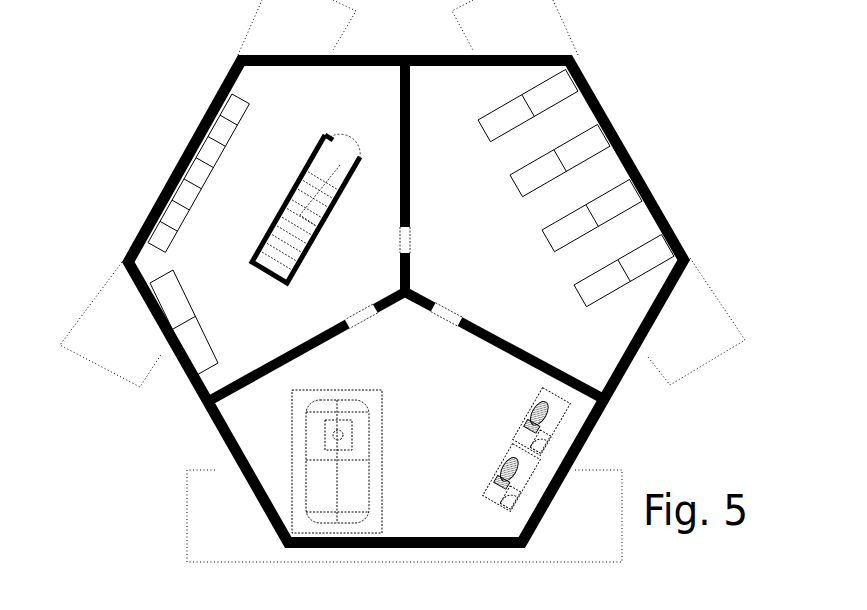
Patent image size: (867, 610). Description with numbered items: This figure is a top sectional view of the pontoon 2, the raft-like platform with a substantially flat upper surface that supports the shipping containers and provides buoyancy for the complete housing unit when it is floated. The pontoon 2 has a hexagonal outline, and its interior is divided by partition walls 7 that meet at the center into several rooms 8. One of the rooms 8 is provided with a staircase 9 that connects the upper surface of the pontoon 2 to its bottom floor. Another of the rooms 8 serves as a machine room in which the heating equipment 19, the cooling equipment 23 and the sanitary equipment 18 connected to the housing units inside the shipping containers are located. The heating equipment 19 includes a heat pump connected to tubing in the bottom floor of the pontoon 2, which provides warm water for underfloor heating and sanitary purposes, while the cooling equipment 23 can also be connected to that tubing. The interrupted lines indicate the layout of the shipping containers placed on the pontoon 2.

The pontoon 2 is at (137, 93).
The partition walls 7 is at (410, 133).
The rooms 8 is at (351, 272).
The staircase 9 is at (305, 193).
The sanitary equipment 18 is at (355, 475).
The heating equipment 19 is at (503, 480).
The cooling equipment 23 is at (533, 418).